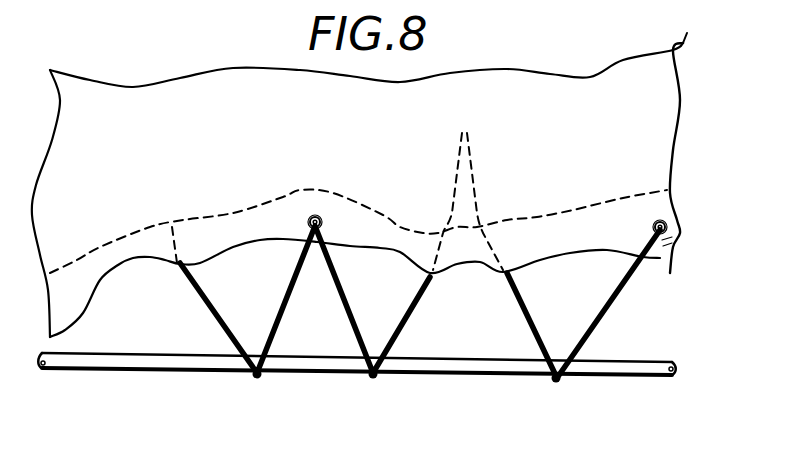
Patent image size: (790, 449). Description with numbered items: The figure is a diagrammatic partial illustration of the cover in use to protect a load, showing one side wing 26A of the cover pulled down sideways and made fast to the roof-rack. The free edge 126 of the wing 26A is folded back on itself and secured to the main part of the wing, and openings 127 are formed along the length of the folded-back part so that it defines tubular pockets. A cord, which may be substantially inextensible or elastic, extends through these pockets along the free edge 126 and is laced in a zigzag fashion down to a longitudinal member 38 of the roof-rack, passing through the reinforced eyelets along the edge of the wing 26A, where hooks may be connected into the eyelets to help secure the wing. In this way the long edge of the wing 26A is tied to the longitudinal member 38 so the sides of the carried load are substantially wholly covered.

The wing 26A is at (133, 122).
The free edge 126 is at (100, 247).
The openings 127 is at (468, 181).
The longitudinal members 38 is at (193, 362).